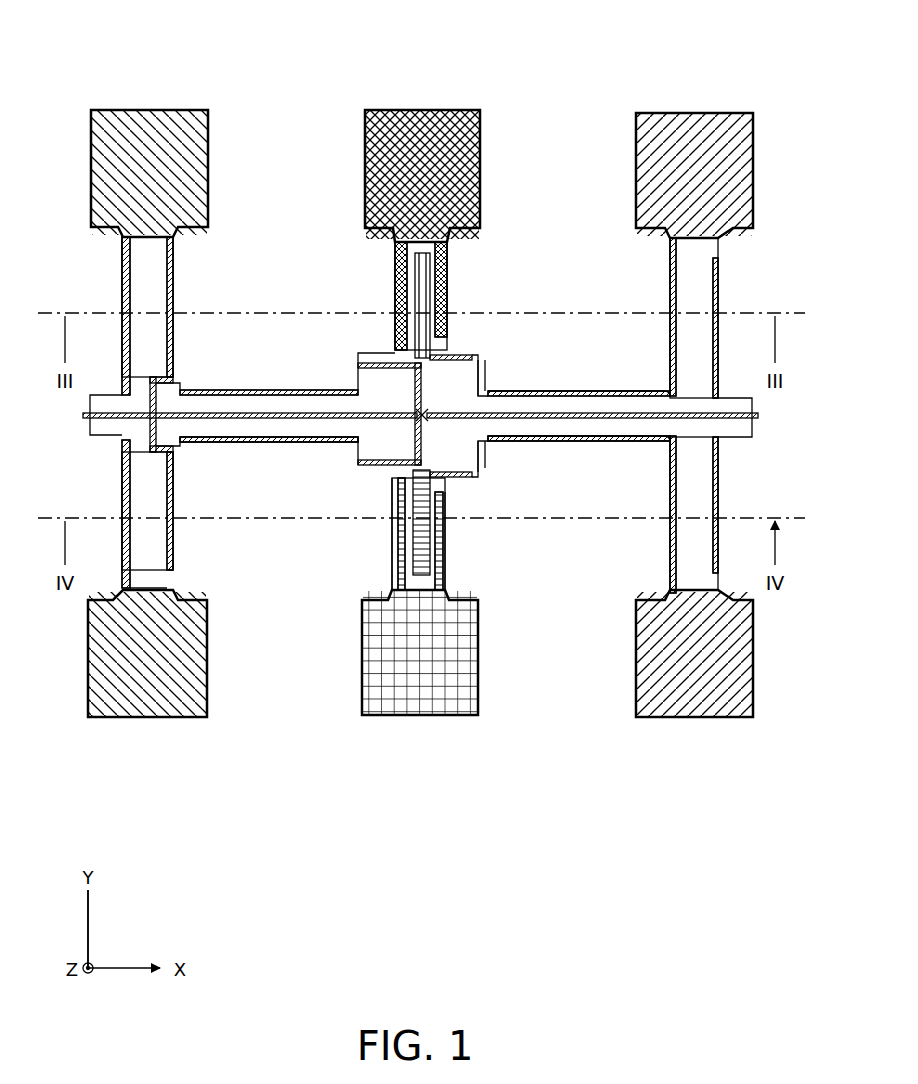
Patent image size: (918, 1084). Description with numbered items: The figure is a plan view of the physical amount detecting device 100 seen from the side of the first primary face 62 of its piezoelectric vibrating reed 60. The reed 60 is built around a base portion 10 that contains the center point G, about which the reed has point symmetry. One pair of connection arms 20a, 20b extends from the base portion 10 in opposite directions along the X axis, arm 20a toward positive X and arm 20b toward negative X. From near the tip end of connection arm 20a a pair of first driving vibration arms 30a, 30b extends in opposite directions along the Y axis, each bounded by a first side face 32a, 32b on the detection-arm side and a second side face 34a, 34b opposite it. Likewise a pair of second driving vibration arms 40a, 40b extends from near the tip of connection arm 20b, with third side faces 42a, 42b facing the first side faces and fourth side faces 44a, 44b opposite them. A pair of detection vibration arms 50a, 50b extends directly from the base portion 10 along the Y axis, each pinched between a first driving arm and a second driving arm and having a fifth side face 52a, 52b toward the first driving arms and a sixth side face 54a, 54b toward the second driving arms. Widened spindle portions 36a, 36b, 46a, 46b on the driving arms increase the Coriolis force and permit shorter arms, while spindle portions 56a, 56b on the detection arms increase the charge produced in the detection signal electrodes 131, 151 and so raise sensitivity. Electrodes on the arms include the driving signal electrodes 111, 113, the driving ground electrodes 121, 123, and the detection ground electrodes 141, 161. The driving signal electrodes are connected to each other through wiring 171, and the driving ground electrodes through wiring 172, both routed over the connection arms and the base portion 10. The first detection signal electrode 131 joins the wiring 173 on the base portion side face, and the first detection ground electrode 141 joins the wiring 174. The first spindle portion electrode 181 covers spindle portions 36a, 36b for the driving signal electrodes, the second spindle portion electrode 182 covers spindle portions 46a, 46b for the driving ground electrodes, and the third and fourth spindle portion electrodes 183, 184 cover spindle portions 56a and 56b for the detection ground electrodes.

The physical amount detecting device 100 is at (707, 46).
The piezoelectric vibrating reed 60 is at (116, 80).
The base portion 10 is at (380, 386).
The connection arm 20a is at (600, 391).
The connection arm 20b is at (283, 390).
The first driving vibration arm 30a is at (718, 352).
The first driving vibration arm 30b is at (716, 471).
The first side face 32a is at (668, 277).
The first side face 32b is at (668, 546).
The second side face 34a is at (720, 277).
The second side face 34b is at (720, 546).
The spindle portion 36a is at (735, 164).
The spindle portion 36b is at (735, 651).
The second driving vibration arm 40a is at (153, 342).
The second driving vibration arm 40b is at (153, 477).
The third side face 42a is at (172, 277).
The third side face 42b is at (172, 546).
The fourth side face 44a is at (121, 277).
The fourth side face 44b is at (121, 546).
The spindle portion 46a is at (190, 166).
The spindle portion 46b is at (192, 651).
The detection vibration arm 50a is at (435, 327).
The detection vibration arm 50b is at (438, 506).
The fifth side face 52a is at (447, 277).
The fifth side face 52b is at (447, 548).
The sixth side face 54a is at (393, 277).
The sixth side face 54b is at (395, 548).
The spindle portion 56a is at (460, 164).
The spindle portion 56b is at (460, 646).
The first primary face 62 is at (462, 398).
The center point G is at (417, 417).
The first driving signal electrode 111 is at (670, 303).
The third driving signal electrode 113 is at (173, 303).
The first driving ground electrode 121 is at (718, 303).
The third driving ground electrode 123 is at (122, 303).
The first detection signal electrode 131 is at (420, 327).
The first detection ground electrode 141 is at (396, 303).
The second detection signal electrode 151 is at (417, 506).
The second detection ground electrode 161 is at (400, 531).
The wiring 171 is at (546, 390).
The wiring 172 is at (263, 389).
The wiring 173 is at (476, 357).
The wiring 174 is at (476, 477).
The first spindle portion electrode 181 is at (658, 163).
The second spindle portion electrode 182 is at (105, 164).
The third spindle portion electrode 183 is at (388, 161).
The fourth spindle portion electrode 184 is at (385, 642).